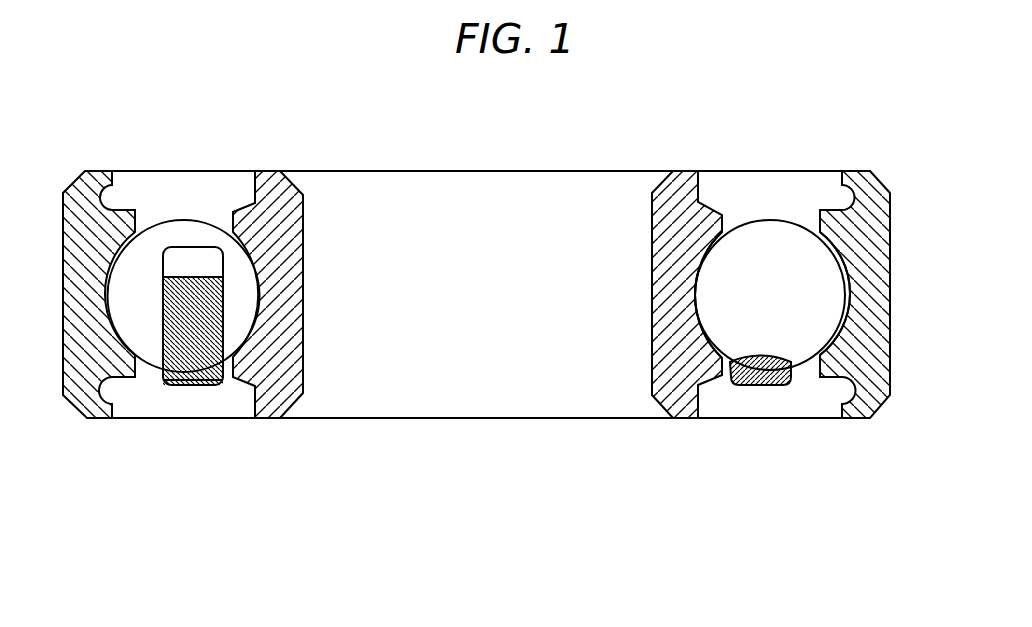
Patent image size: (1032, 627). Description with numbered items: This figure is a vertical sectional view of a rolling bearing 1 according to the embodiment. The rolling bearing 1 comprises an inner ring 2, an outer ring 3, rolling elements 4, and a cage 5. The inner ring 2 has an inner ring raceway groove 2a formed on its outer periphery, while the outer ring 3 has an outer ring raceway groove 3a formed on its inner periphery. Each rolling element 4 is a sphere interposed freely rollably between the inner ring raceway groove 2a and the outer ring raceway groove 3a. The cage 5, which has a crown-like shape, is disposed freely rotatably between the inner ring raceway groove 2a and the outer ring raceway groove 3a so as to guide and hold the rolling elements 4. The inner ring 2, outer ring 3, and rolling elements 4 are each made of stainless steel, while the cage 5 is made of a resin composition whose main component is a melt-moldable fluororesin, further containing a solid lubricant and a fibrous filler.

The rolling bearing 1 is at (867, 160).
The inner ring 2 is at (652, 217).
The inner ring raceway groove 2a is at (703, 273).
The outer ring 3 is at (891, 223).
The outer ring raceway groove 3a is at (838, 273).
The rolling elements 4 is at (766, 232).
The cage 5 is at (188, 386).